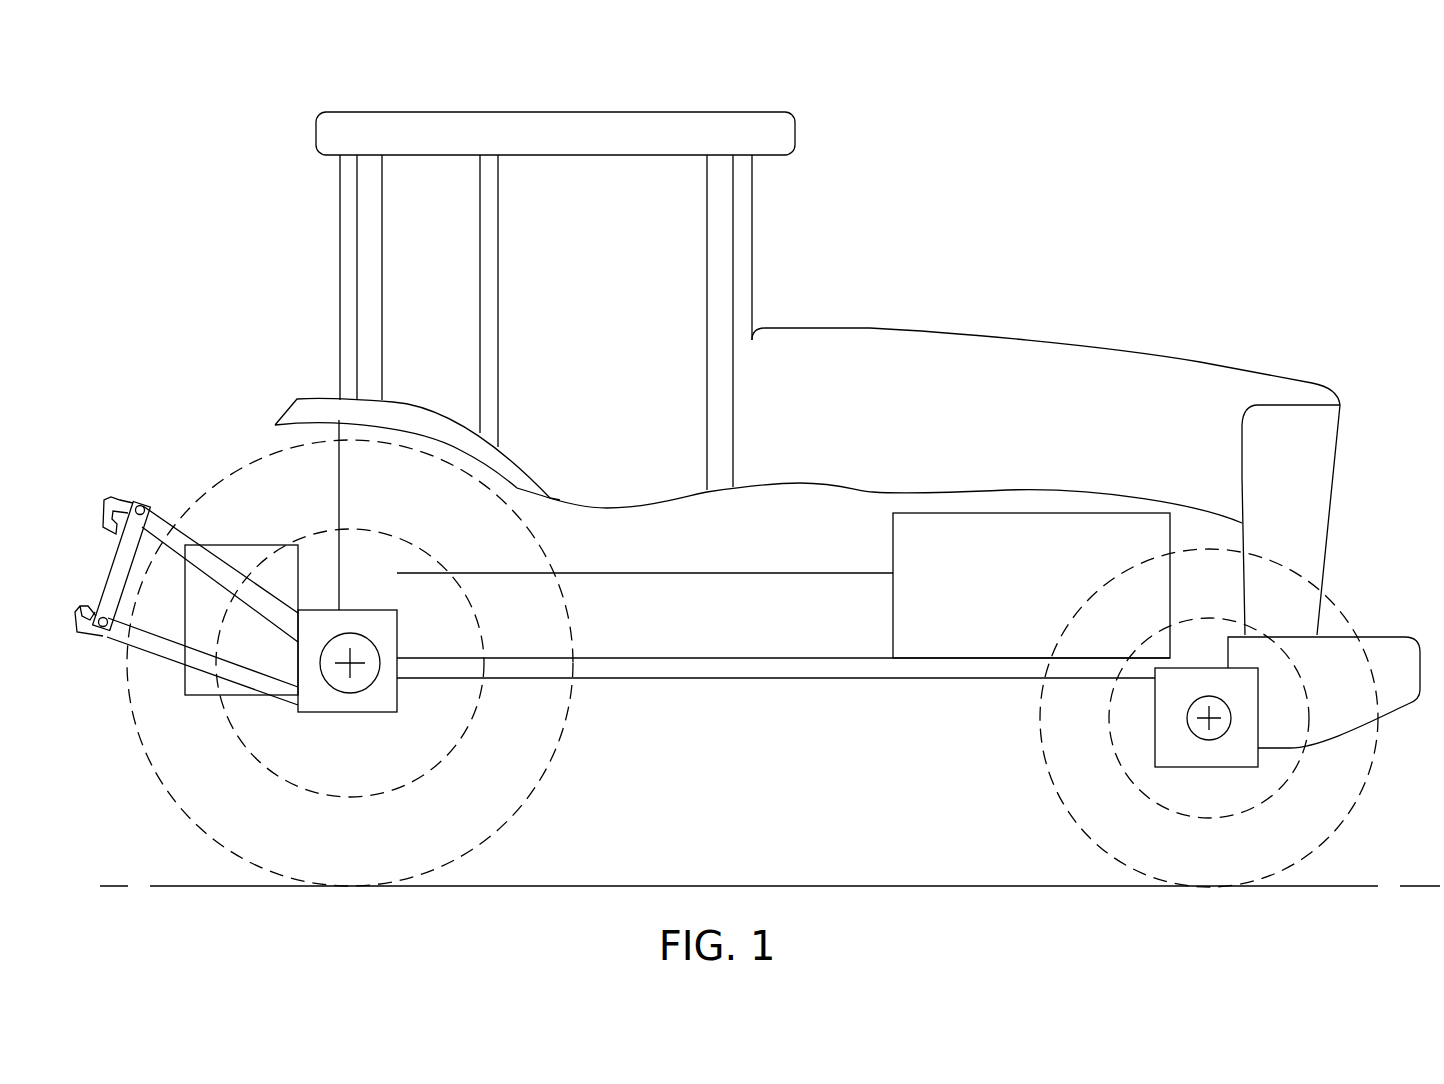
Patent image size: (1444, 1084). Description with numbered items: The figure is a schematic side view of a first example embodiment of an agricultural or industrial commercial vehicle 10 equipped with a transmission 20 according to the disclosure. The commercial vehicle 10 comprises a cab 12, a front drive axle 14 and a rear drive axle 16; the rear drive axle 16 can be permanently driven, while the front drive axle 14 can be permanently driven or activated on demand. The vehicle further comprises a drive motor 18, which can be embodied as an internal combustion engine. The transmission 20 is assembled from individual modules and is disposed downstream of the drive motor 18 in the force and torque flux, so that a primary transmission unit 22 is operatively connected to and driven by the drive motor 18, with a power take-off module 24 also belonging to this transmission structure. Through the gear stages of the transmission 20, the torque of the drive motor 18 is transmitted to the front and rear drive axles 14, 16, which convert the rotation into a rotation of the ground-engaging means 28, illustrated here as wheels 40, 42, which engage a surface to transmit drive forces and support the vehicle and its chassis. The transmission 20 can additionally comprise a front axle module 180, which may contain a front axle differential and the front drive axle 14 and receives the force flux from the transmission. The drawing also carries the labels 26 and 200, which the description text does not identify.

The commercial vehicle 10 is at (1082, 103).
The cab 12 is at (652, 142).
The front drive axle 14 is at (1213, 722).
The rear drive axle 16 is at (347, 660).
The drive motor 18 is at (986, 597).
The transmission 20 is at (787, 443).
The primary transmission unit 22 is at (633, 629).
The power take-off module 24 is at (363, 618).
The front hitch assembly 26 is at (238, 651).
The ground-engaging means 28 is at (752, 693).
The wheel 40 is at (272, 822).
The wheel 42 is at (1147, 837).
The front axle module 180 is at (1175, 730).
The ground surface 200 is at (483, 886).